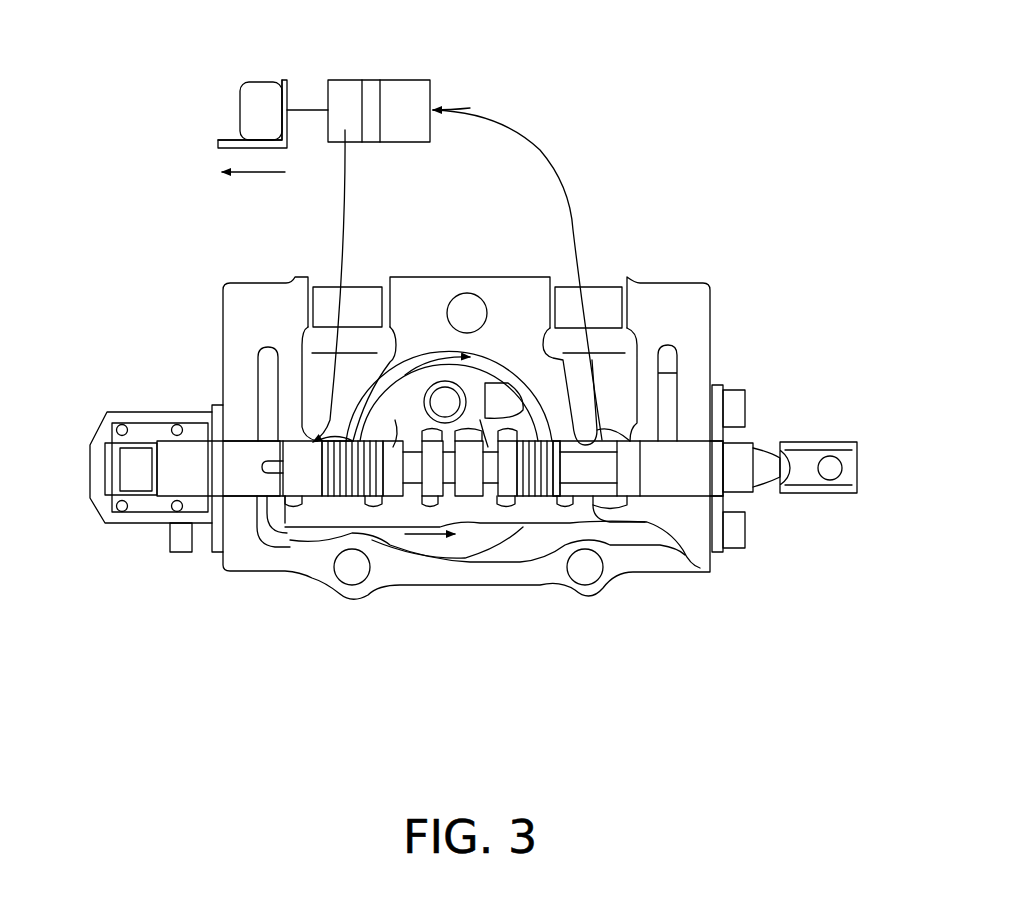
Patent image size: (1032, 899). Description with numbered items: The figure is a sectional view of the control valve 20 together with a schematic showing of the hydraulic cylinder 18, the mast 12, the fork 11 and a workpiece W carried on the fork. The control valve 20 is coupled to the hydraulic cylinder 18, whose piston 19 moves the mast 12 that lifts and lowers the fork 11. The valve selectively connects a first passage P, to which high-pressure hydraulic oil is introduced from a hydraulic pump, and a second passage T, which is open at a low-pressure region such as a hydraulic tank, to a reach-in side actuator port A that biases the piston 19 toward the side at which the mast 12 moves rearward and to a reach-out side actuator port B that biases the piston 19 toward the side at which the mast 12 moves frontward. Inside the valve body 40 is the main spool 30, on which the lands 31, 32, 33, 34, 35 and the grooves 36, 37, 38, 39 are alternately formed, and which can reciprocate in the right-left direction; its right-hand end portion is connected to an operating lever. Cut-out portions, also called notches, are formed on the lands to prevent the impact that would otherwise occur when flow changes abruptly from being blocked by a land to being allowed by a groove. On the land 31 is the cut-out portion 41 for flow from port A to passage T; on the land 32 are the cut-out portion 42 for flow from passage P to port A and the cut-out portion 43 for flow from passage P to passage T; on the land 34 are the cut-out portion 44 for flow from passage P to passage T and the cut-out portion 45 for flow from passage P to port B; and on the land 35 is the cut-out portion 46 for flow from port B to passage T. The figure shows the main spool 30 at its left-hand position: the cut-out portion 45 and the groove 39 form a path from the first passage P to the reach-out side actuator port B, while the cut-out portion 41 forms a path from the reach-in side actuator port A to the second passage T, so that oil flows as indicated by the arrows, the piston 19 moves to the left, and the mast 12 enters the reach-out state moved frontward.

The fork 11 is at (222, 140).
The workpiece W is at (262, 95).
The mast 12 is at (285, 105).
The hydraulic cylinder 18 is at (410, 78).
The piston 19 is at (370, 90).
The control valve 20 is at (627, 123).
The main spool 30 is at (820, 493).
The land 31 is at (215, 470).
The land 32 is at (345, 465).
The land 33 is at (432, 480).
The land 34 is at (553, 480).
The land 35 is at (688, 497).
The groove 36 is at (318, 465).
The groove 37 is at (400, 490).
The groove 38 is at (468, 480).
The groove 39 is at (583, 480).
The valve body 40 is at (255, 305).
The cut-out portion 41 is at (257, 423).
The cut-out portion 42 is at (347, 441).
The cut-out portion 43 is at (393, 447).
The cut-out portion 44 is at (488, 447).
The cut-out portion 45 is at (600, 455).
The cut-out portion 46 is at (653, 450).
The reach-in side actuator port A is at (350, 280).
The reach-out side actuator port B is at (602, 280).
The first passage P is at (440, 400).
The second passage T is at (485, 540).